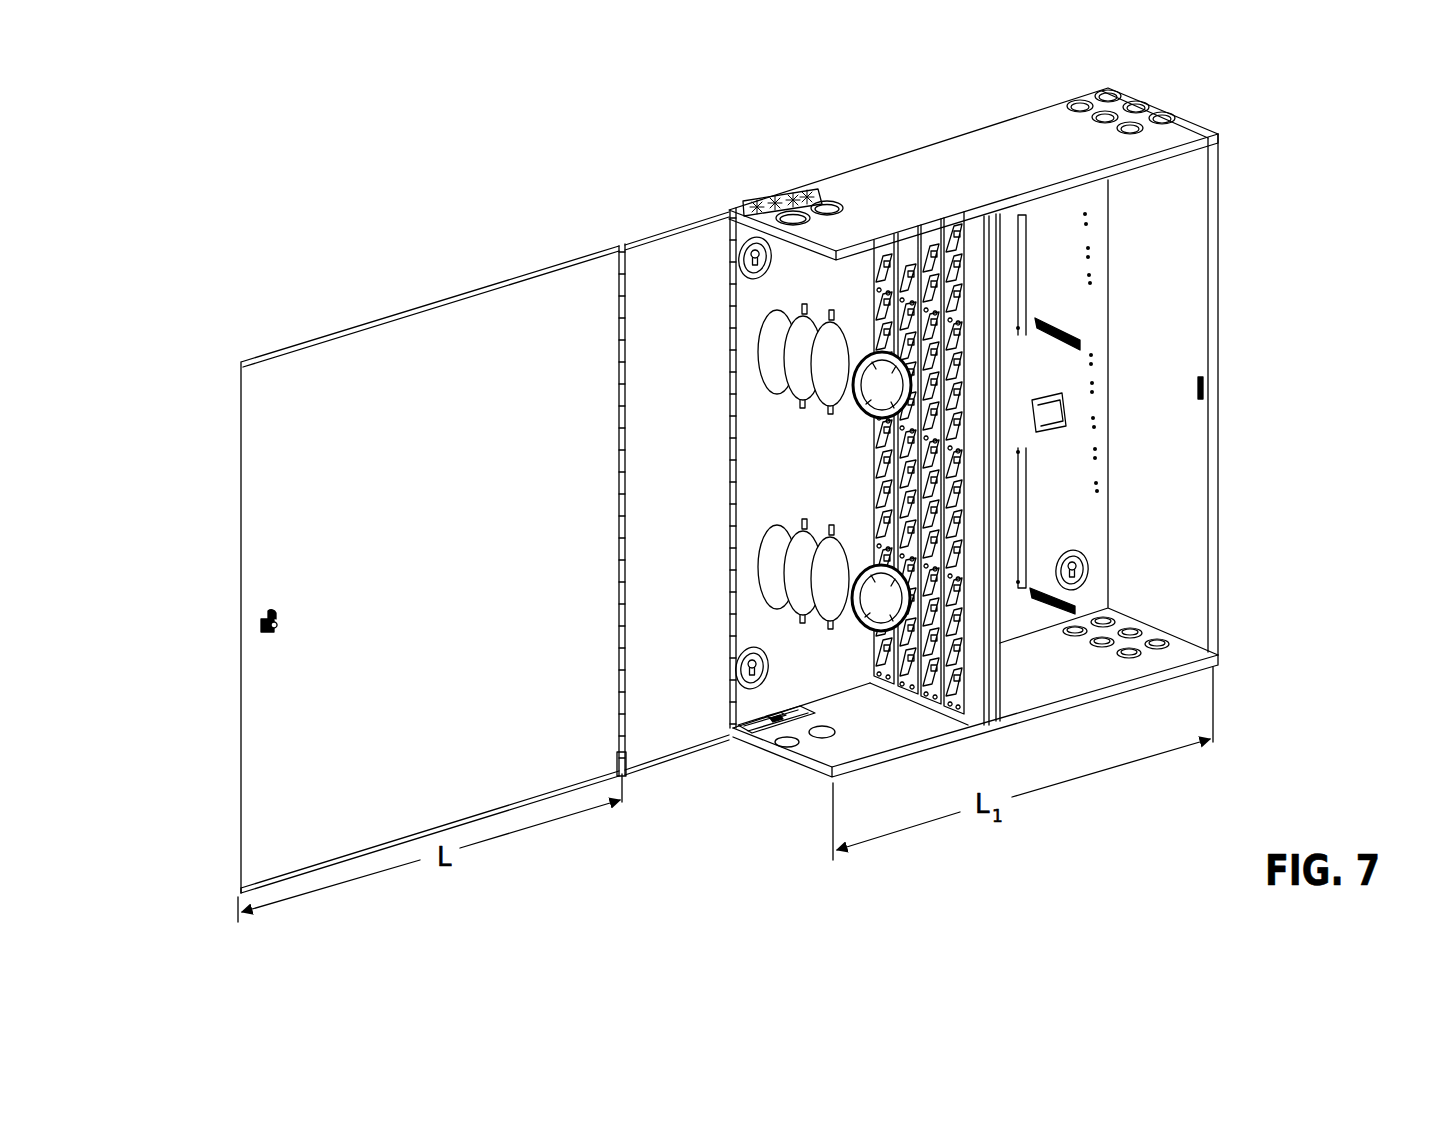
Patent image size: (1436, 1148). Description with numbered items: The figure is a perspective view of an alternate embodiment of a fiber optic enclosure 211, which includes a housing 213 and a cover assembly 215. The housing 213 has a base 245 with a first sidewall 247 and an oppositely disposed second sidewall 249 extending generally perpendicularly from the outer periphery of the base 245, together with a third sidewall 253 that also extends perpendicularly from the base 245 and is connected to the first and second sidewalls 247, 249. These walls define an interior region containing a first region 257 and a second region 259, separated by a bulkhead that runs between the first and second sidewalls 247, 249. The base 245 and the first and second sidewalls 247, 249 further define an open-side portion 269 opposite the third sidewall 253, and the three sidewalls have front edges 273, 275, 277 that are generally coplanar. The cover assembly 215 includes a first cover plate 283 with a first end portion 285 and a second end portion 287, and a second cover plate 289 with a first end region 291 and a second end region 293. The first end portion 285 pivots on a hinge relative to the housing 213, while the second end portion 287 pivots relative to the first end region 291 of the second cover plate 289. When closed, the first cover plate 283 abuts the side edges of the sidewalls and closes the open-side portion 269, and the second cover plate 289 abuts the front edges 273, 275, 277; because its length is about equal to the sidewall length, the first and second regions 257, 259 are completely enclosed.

The fiber optic enclosure 211 is at (546, 170).
The housing 213 is at (972, 138).
The cover assembly 215 is at (542, 846).
The base 245 is at (815, 483).
The first sidewall 247 is at (930, 176).
The second sidewall 249 is at (976, 735).
The third sidewall 253 is at (1222, 180).
The first region 257 is at (1020, 625).
The second region 259 is at (808, 672).
The open-side portion 269 is at (765, 709).
The front edge of first sidewall 273 is at (862, 250).
The front edge of second sidewall 275 is at (912, 746).
The front edge of third sidewall 277 is at (1207, 465).
The first cover plate 283 is at (677, 224).
The first end portion 285 is at (726, 742).
The second end portion 287 is at (645, 263).
The second cover plate 289 is at (411, 304).
The first end region 291 is at (618, 757).
The second end region 293 is at (240, 880).